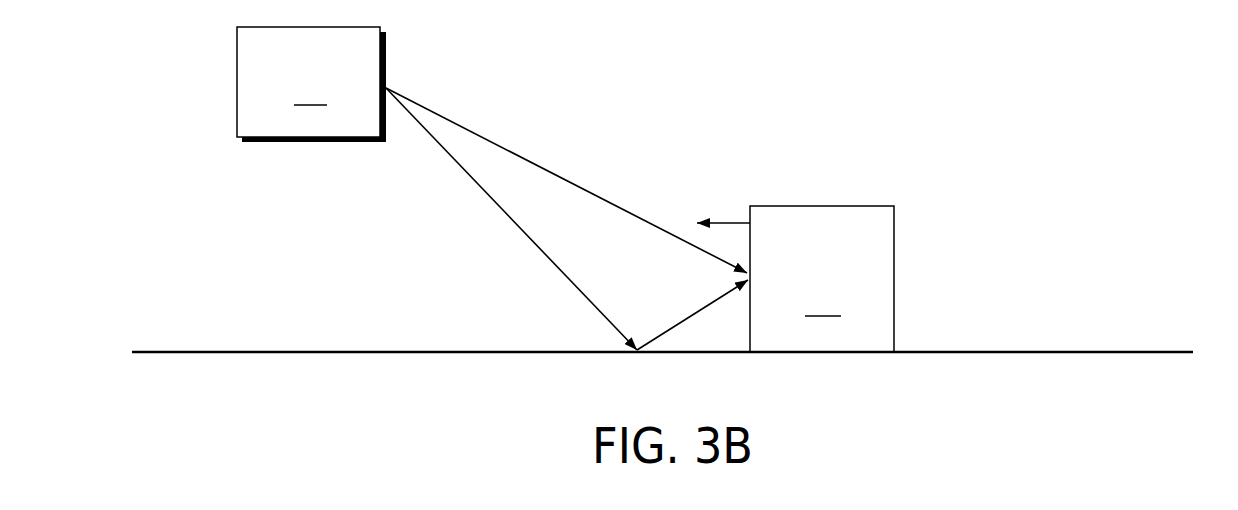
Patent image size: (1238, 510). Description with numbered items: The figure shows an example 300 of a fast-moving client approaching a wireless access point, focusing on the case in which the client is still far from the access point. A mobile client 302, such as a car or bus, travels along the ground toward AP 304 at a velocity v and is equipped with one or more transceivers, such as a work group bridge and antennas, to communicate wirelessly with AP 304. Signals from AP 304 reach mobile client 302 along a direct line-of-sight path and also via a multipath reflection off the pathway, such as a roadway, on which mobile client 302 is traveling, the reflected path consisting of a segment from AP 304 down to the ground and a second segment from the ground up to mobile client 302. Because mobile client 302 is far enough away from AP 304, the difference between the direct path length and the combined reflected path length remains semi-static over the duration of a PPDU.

The example of a fast-moving client approaching a wireless access point 300 is at (129, 82).
The access point 304 is at (311, 84).
The mobile client 302 is at (822, 279).